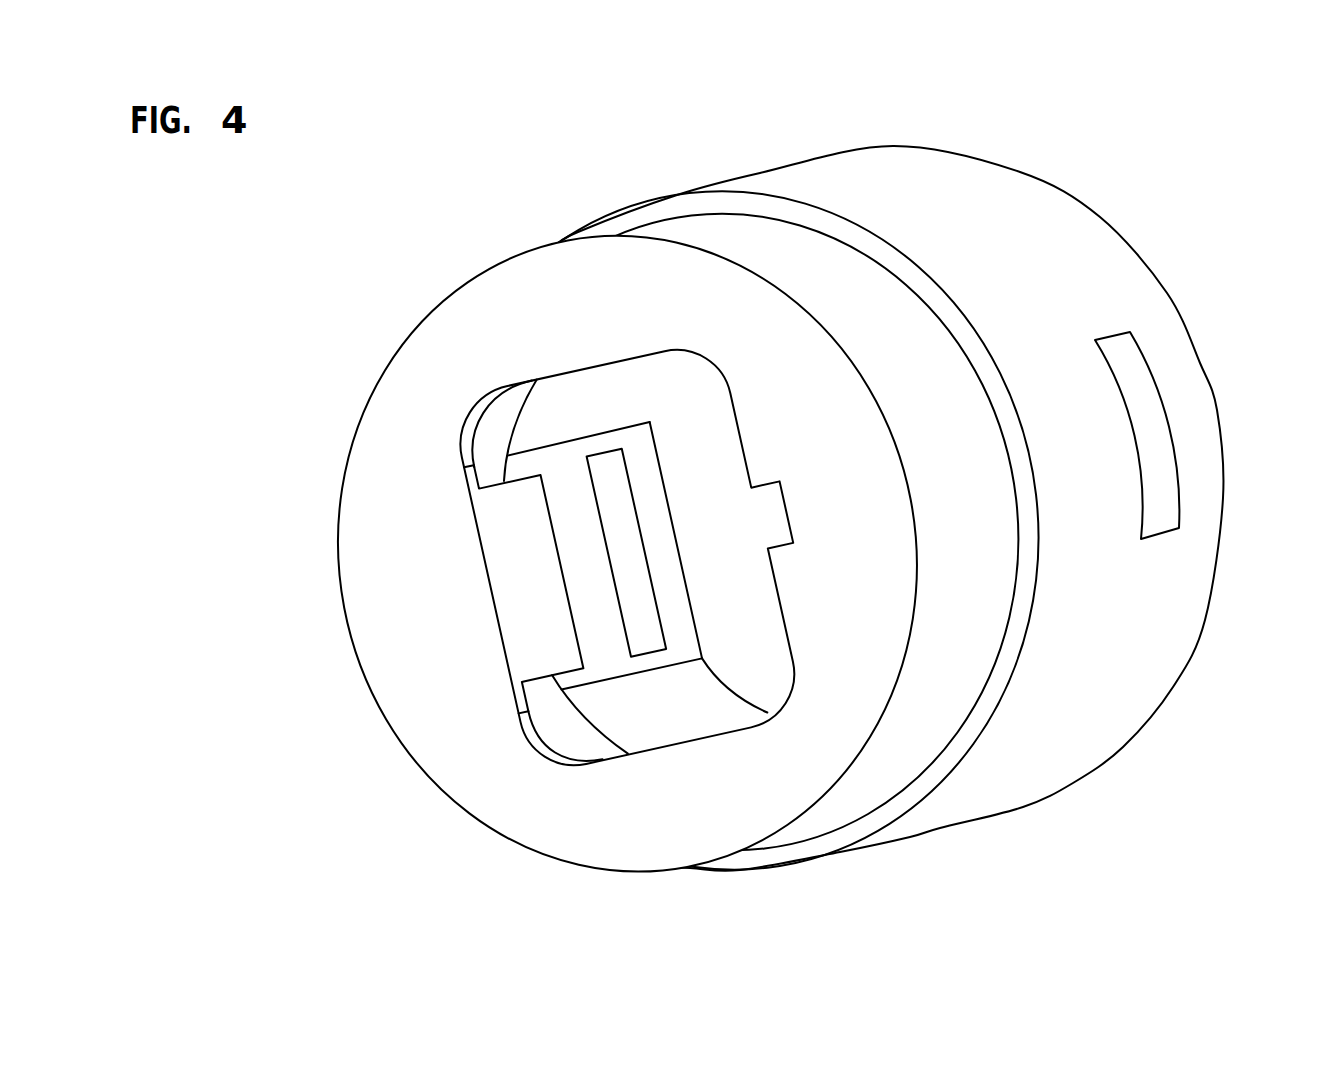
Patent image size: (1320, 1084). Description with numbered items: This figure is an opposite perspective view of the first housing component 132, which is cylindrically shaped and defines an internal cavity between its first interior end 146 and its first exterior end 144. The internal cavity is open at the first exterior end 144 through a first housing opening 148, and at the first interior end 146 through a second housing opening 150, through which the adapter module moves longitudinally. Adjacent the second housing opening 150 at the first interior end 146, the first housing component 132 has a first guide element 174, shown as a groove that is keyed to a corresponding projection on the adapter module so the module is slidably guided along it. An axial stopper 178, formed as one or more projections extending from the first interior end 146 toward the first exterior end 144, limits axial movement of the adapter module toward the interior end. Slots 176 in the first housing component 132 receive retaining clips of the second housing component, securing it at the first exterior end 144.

The first housing component 132 is at (428, 175).
The first exterior end 144 is at (1075, 169).
The first interior end 146 is at (397, 325).
The first housing opening 148 is at (710, 525).
The second housing opening 150 is at (688, 718).
The first guide element 174 is at (775, 530).
The slots 176 is at (627, 546).
The axial stopper 178 is at (565, 525).